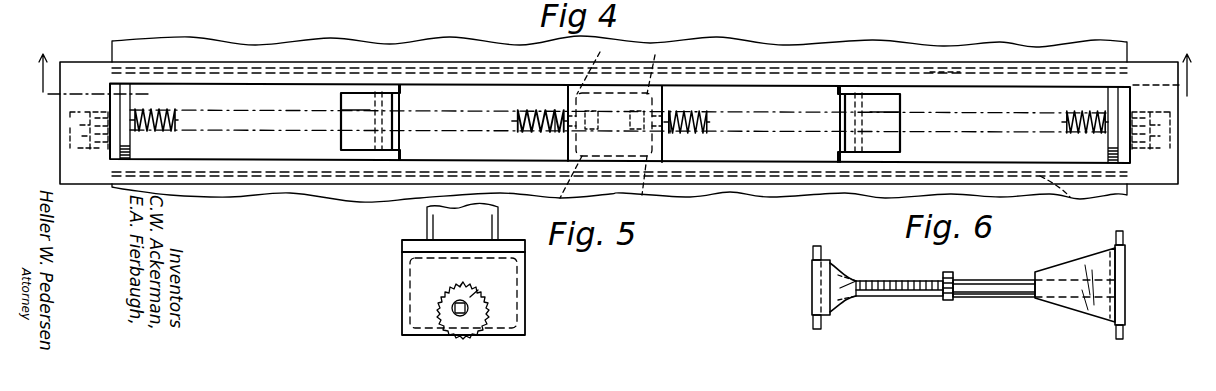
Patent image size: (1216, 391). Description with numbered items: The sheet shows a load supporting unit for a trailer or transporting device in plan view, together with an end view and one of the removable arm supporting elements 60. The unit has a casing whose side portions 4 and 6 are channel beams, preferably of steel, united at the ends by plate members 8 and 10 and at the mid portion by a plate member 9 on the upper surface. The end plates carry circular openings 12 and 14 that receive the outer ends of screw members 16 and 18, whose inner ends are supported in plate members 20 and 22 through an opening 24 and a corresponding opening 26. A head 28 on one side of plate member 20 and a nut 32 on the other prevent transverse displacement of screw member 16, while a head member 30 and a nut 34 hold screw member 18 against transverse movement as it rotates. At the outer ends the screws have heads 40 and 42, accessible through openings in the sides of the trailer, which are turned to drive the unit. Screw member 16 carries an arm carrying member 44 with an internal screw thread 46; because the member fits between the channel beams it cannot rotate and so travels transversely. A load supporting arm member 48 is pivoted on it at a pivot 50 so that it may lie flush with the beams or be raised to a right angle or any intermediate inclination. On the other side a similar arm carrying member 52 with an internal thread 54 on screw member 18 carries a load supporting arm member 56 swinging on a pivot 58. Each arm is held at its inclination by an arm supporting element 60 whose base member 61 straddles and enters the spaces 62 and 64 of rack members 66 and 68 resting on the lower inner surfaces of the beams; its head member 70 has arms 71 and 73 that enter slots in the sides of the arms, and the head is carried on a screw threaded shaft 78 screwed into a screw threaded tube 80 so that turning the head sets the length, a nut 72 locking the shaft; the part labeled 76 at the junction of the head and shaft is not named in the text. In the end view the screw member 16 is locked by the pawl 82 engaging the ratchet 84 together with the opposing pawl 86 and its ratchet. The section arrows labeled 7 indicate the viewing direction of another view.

In FIG. 4, the side portion 4 is at (318, 188).
In FIG. 4, the side portion 6 is at (268, 62).
In FIG. 4, the section line 7 is at (608, 85).
In FIG. 4, the plate member 8 is at (136, 128).
In FIG. 4, the plate member 9 is at (615, 124).
In FIG. 4, the plate member 10 is at (1105, 138).
In FIG. 4, the circular opening 12 is at (165, 112).
In FIG. 4, the circular opening 14 is at (1100, 112).
In FIG. 4, the screw member 16 is at (312, 122).
In FIG. 4, the screw member 18 is at (1012, 122).
In FIG. 4, the plate member 20 is at (554, 190).
In FIG. 4, the plate member 22 is at (653, 188).
In FIG. 4, the opening 24 is at (565, 108).
In FIG. 4, the opening 26 is at (680, 103).
In FIG. 4, the head 28 is at (591, 67).
In FIG. 4, the head member 30 is at (654, 68).
In FIG. 4, the nut 32 is at (552, 128).
In FIG. 4, the nut 34 is at (672, 130).
In FIG. 4, the head 40 is at (88, 139).
In FIG. 5, the head 40 is at (500, 312).
In FIG. 4, the head 42 is at (1151, 138).
In FIG. 4, the arm carrying member 44 is at (370, 98).
In FIG. 4, the internal screw thread 46 is at (338, 103).
In FIG. 4, the load supporting arm member 48 is at (400, 135).
In FIG. 5, the load supporting arm member 48 is at (440, 230).
In FIG. 4, the pivot 50 is at (376, 90).
In FIG. 4, the arm carrying member 52 is at (888, 100).
In FIG. 4, the internal thread 54 is at (905, 103).
In FIG. 4, the load supporting arm member 56 is at (840, 103).
In FIG. 4, the pivot 58 is at (860, 92).
In FIG. 6, the arm supporting element 60 is at (1020, 262).
In FIG. 6, the base member 61 is at (1097, 308).
In FIG. 4, the space 62 is at (255, 176).
In FIG. 4, the space 64 is at (218, 72).
In FIG. 4, the rack member 66 is at (1070, 198).
In FIG. 4, the rack member 68 is at (945, 70).
In FIG. 6, the head member 70 is at (812, 286).
In FIG. 6, the arm 71 is at (812, 324).
In FIG. 6, the nut 72 is at (946, 272).
In FIG. 6, the arm 73 is at (812, 252).
In FIG. 6, the horn 76 is at (846, 284).
In FIG. 6, the screw threaded shaft 78 is at (912, 295).
In FIG. 6, the screw threaded tube 80 is at (1015, 298).
In FIG. 5, the pawl 82 is at (465, 290).
In FIG. 5, the ratchet 84 is at (440, 312).
In FIG. 5, the opposing pawl 86 is at (480, 292).